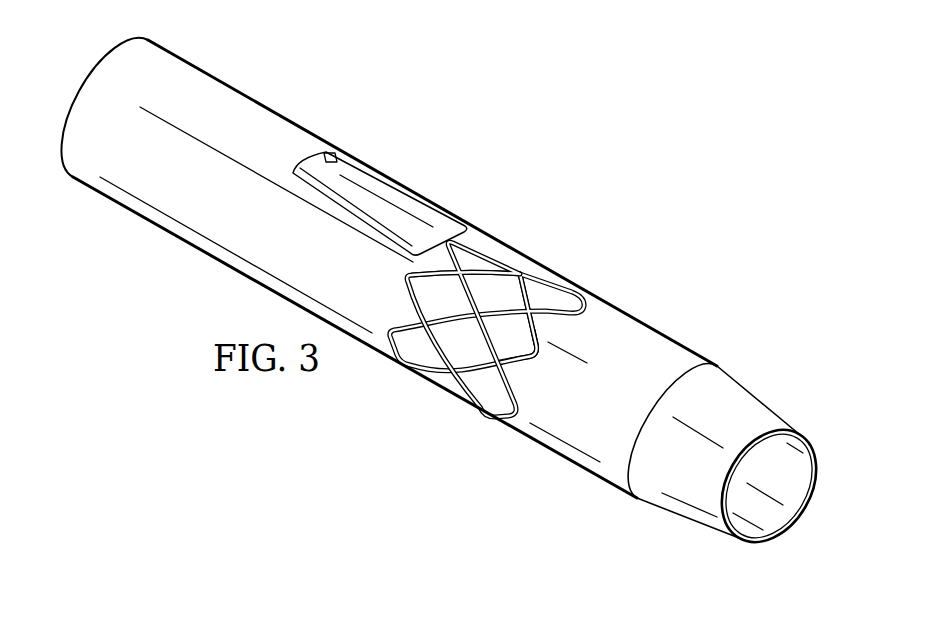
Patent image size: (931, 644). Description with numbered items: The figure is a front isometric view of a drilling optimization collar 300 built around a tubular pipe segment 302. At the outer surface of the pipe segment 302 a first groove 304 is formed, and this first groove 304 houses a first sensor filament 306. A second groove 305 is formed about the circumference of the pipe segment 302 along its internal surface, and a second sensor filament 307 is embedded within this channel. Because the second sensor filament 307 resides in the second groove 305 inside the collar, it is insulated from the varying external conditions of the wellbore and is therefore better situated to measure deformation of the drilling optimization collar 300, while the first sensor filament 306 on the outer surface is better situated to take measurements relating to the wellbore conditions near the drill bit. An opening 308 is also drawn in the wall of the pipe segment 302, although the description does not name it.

The drilling optimization collar 300 is at (448, 296).
The pipe segment 302 is at (227, 82).
The first groove 304 is at (541, 277).
The second groove 305 is at (537, 328).
The first sensor filament 306 is at (477, 272).
The second sensor filament 307 is at (537, 342).
The window 308 is at (304, 154).